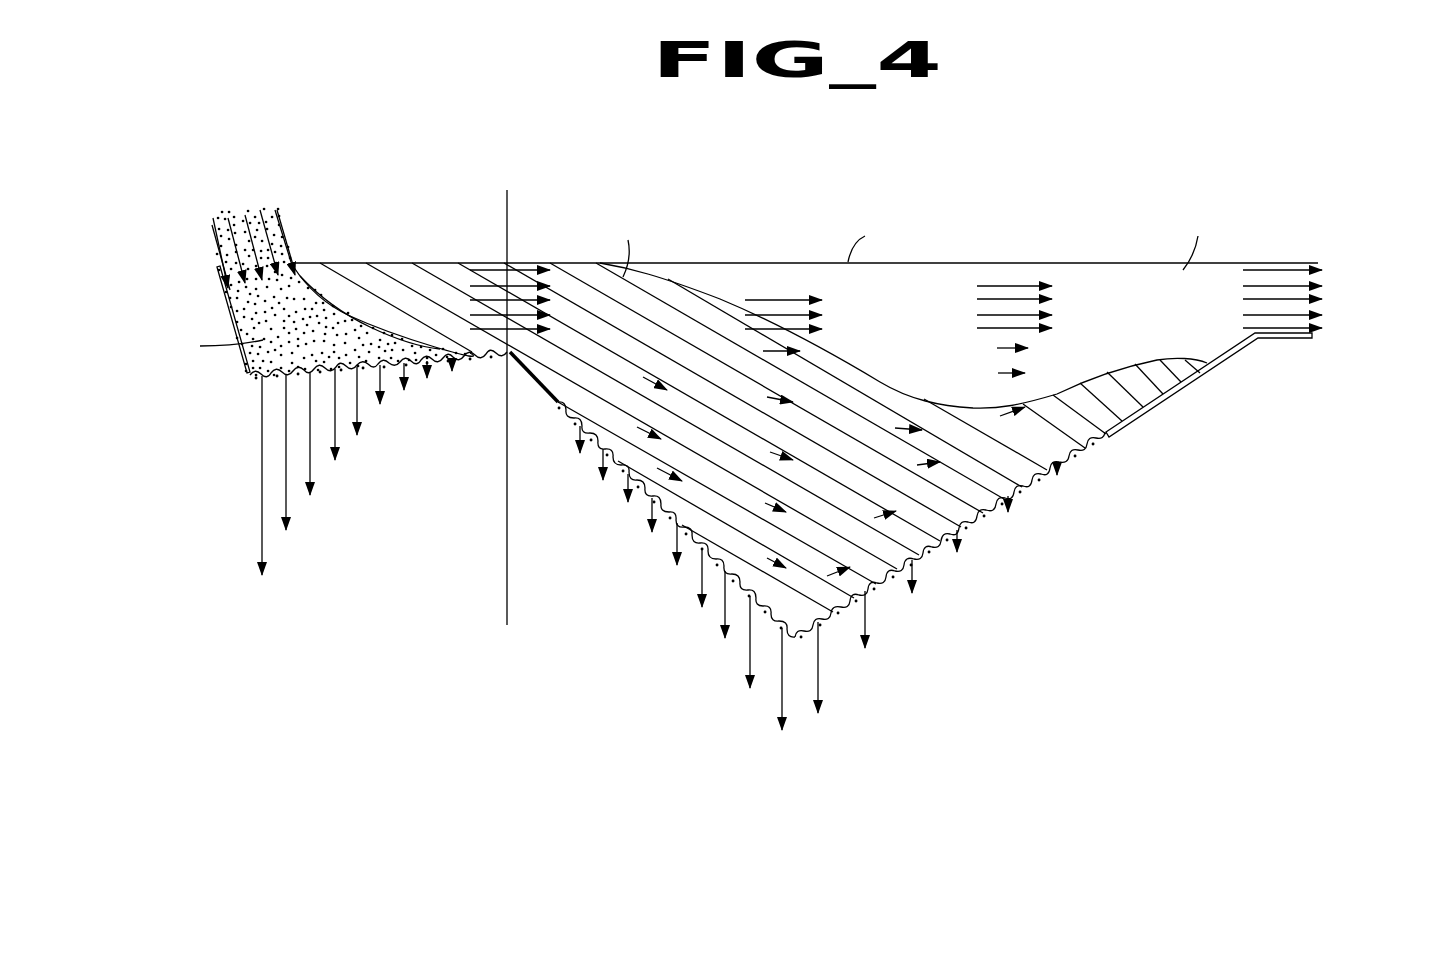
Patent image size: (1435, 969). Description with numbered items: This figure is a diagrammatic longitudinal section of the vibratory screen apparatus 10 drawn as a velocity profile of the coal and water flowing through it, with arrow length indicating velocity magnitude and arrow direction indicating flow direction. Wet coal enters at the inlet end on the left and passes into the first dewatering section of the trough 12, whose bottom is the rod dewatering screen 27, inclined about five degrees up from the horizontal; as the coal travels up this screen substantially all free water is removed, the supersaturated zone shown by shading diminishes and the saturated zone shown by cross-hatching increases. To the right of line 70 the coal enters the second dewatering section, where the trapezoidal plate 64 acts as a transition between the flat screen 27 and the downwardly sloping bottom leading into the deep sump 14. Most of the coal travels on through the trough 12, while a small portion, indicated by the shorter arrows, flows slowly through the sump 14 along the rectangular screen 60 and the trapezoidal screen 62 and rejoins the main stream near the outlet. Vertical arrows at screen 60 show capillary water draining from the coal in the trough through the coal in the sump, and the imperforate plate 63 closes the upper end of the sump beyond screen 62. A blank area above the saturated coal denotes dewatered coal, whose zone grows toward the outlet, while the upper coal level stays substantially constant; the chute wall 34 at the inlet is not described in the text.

The vibratory screen apparatus 10 is at (1164, 507).
The trough 12 is at (985, 258).
The sump 14 is at (825, 494).
The dewatering screen 27 is at (252, 378).
The chute wall 34 is at (217, 294).
The rectangular screen 60 is at (650, 495).
The trapezoidal screen 62 is at (1080, 450).
The imperforate plate 63 is at (1185, 382).
The trapezoidal plate 64 is at (548, 390).
The line 70 is at (507, 467).